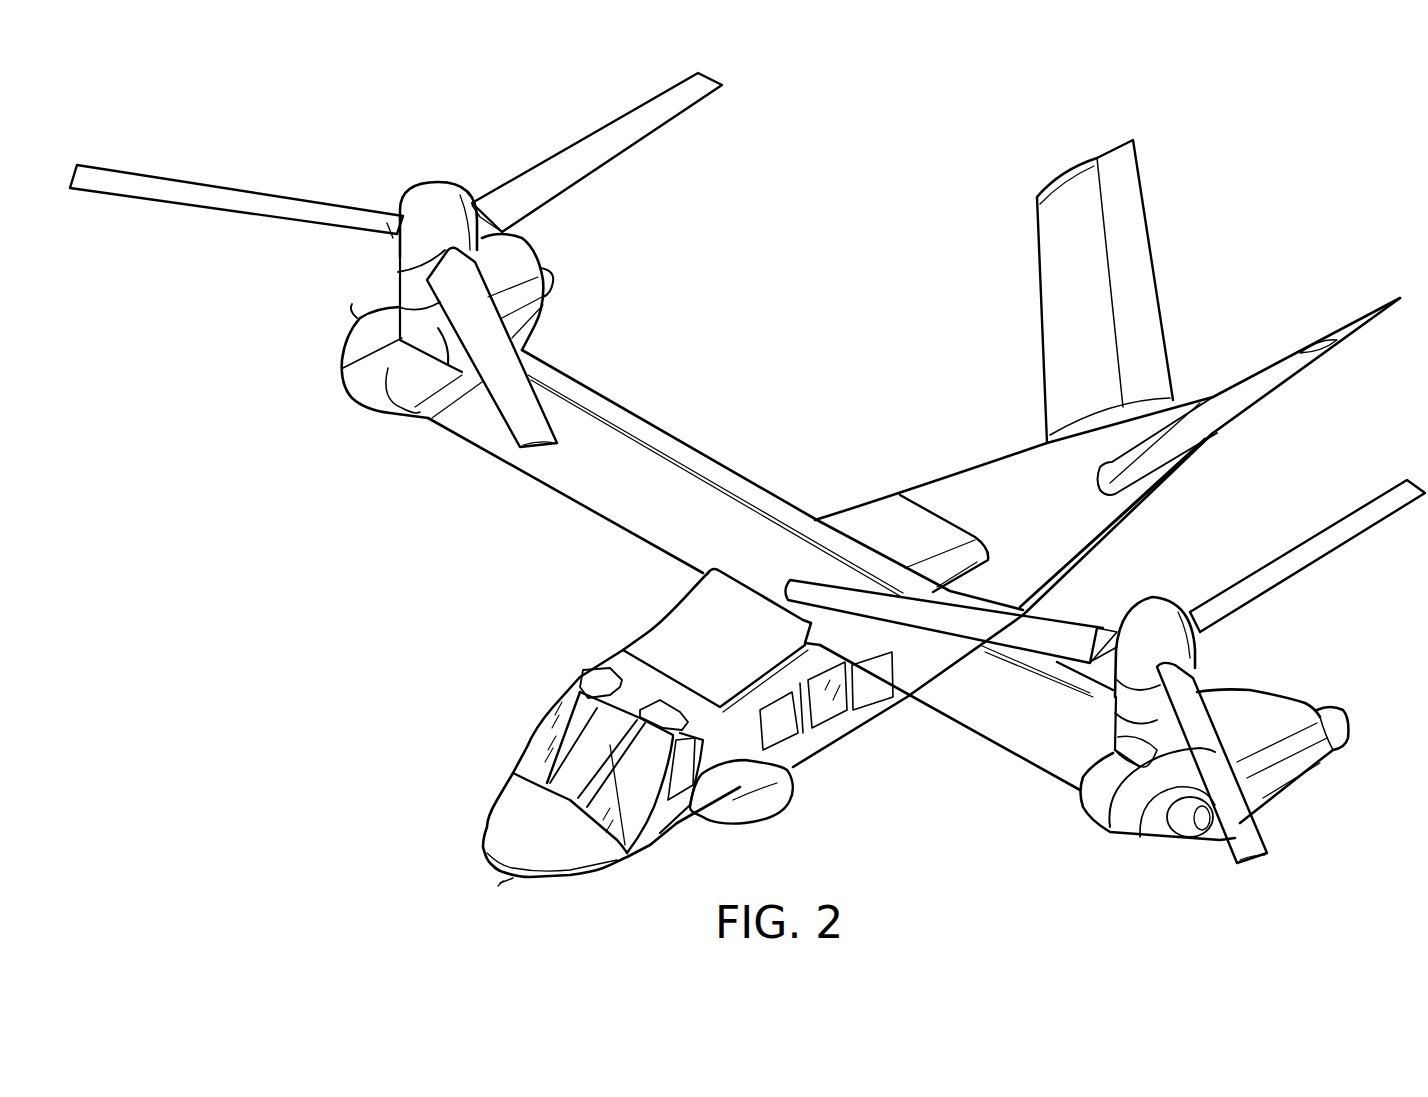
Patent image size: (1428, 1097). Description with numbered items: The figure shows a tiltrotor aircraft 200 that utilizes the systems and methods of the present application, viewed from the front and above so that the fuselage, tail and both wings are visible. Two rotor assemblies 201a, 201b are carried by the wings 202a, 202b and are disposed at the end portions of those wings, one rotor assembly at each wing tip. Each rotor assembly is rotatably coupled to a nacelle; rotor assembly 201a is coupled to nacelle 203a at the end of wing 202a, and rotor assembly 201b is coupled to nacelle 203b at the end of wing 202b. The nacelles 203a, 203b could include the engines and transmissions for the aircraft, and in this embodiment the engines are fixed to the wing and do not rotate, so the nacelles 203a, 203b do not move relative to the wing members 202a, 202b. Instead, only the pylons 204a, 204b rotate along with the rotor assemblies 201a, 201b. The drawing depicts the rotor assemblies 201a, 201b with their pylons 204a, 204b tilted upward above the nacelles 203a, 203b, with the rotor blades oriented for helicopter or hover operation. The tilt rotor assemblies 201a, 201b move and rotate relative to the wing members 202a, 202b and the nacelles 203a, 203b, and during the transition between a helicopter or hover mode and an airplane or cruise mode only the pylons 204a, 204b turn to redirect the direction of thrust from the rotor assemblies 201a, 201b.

The tiltrotor aircraft 200 is at (747, 474).
The rotor assembly 201a is at (433, 165).
The rotor assembly 201b is at (1162, 585).
The wing 202a is at (598, 503).
The wing 202b is at (973, 722).
The nacelle 203a is at (353, 375).
The nacelle 203b is at (1287, 773).
The pylon 204a is at (403, 277).
The pylon 204b is at (1122, 698).